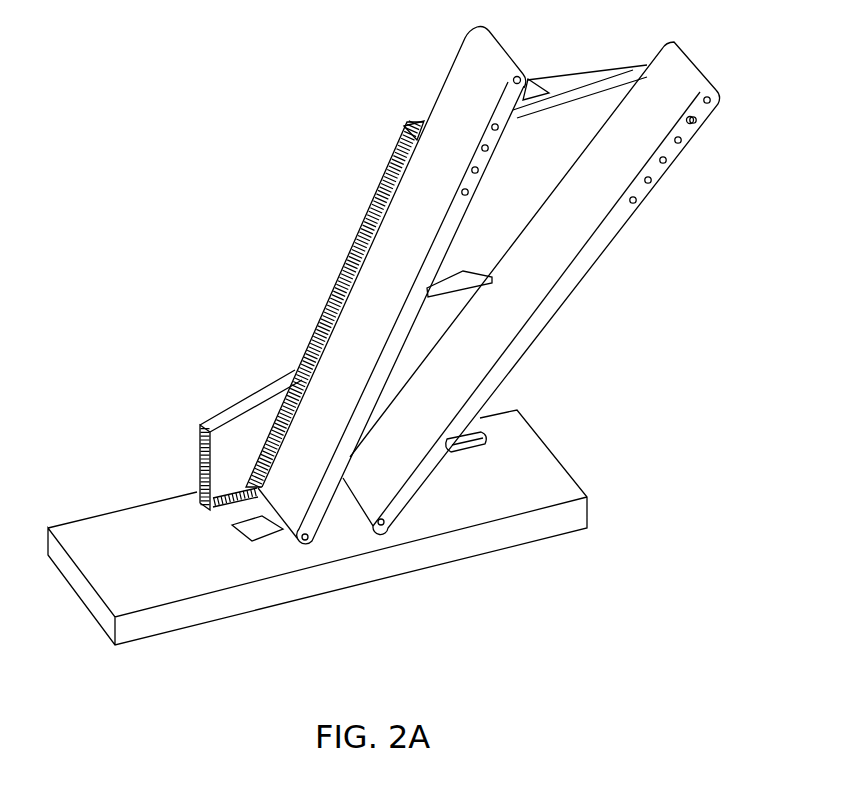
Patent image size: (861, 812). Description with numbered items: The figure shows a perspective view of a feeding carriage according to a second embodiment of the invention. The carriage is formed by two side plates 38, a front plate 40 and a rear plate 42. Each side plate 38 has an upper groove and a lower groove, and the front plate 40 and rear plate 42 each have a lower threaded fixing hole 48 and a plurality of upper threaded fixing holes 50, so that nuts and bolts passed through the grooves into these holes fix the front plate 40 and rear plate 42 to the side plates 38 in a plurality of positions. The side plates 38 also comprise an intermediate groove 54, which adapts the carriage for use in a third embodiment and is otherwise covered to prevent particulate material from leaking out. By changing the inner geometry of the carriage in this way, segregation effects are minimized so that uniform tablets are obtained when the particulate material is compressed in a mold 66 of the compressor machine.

The side plate 38 is at (503, 197).
The front plate 40 is at (363, 333).
The rear plate 42 is at (543, 303).
The lower threaded fixing hole 48 is at (328, 545).
The upper threaded fixing holes 50 is at (683, 132).
The intermediate groove 54 is at (462, 278).
The mold 66 is at (278, 542).